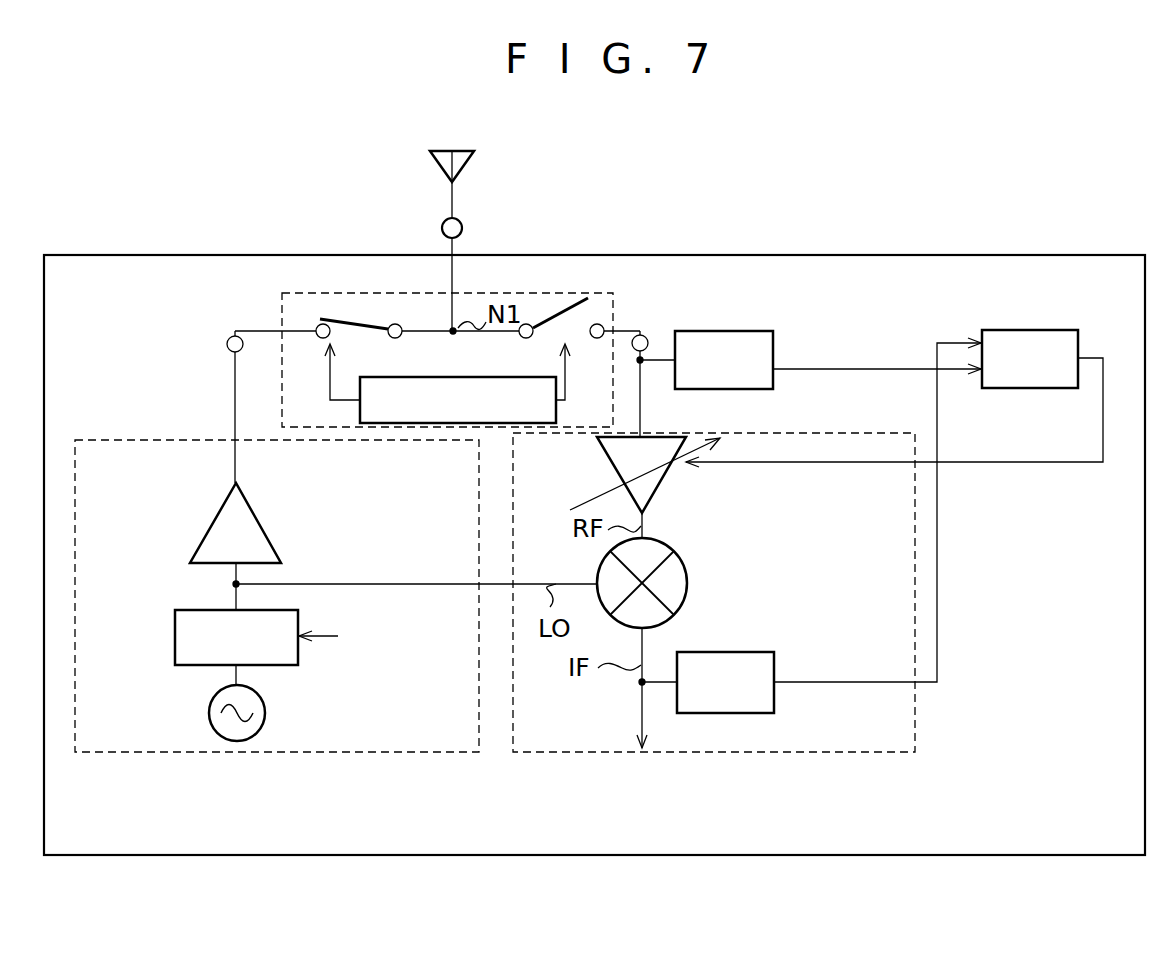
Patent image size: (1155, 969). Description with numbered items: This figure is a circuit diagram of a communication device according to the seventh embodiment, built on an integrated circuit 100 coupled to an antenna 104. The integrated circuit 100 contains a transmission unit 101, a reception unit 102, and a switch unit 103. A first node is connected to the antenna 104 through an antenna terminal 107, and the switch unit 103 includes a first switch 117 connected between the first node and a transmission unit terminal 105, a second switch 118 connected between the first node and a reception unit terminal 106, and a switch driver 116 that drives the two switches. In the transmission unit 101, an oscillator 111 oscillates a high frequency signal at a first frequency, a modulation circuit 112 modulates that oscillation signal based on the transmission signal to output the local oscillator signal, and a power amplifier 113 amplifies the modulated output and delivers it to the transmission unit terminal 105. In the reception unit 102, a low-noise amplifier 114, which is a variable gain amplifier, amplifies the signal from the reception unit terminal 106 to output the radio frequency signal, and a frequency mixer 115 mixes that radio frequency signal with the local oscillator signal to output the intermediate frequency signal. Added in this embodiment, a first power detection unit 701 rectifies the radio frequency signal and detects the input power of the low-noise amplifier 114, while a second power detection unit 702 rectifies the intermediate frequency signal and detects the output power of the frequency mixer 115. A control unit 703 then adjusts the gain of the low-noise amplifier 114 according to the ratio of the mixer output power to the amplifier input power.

The integrated circuit 100 is at (775, 255).
The transmission unit 101 is at (273, 754).
The reception unit 102 is at (730, 754).
The switch unit 103 is at (613, 293).
The antenna 104 is at (466, 152).
The transmission unit terminal 105 is at (227, 344).
The reception unit terminal 106 is at (646, 336).
The antenna terminal 107 is at (463, 228).
The oscillator 111 is at (208, 712).
The modulation circuit 112 is at (174, 636).
The power amplifier 113 is at (258, 520).
The low-noise amplifier 114 is at (665, 478).
The frequency mixer 115 is at (687, 583).
The switch driver 116 is at (435, 377).
The first switch 117 is at (358, 325).
The second switch 118 is at (566, 320).
The first power detection unit 701 is at (720, 331).
The second power detection unit 702 is at (700, 652).
The control unit 703 is at (995, 330).